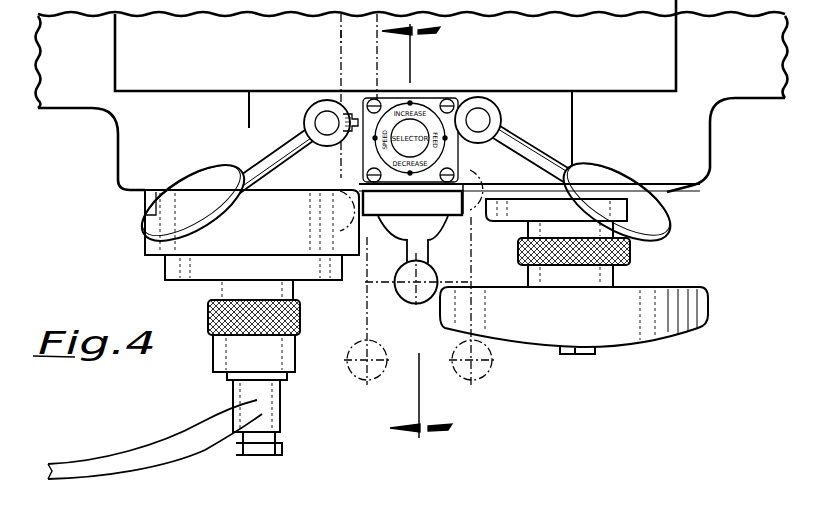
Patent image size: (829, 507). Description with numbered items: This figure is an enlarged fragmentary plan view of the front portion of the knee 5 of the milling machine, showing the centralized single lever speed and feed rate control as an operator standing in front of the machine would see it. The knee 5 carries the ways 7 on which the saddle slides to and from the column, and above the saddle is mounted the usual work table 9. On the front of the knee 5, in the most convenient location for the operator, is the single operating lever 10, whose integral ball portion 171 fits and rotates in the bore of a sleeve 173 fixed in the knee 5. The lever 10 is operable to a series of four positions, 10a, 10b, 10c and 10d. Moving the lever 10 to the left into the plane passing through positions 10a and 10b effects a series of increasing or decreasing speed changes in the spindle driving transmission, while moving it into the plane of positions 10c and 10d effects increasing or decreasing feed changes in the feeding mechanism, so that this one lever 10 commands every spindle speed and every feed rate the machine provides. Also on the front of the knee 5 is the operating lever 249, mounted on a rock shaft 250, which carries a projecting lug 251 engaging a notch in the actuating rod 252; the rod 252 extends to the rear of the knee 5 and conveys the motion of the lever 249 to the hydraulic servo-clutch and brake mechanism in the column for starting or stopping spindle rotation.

The knee 5 is at (98, 100).
The ways 7 is at (266, 116).
The work table 9 is at (417, 243).
The operating lever 10 is at (427, 271).
The lever position 10a is at (350, 183).
The lever position 10b is at (358, 377).
The lever position 10c is at (485, 180).
The lever position 10d is at (480, 376).
The ball portion 171 is at (403, 231).
The sleeve 173 is at (412, 203).
The operating lever 249 is at (200, 182).
The rock shaft 250 is at (240, 155).
The projecting lug 251 is at (348, 113).
The actuating rod 252 is at (340, 39).